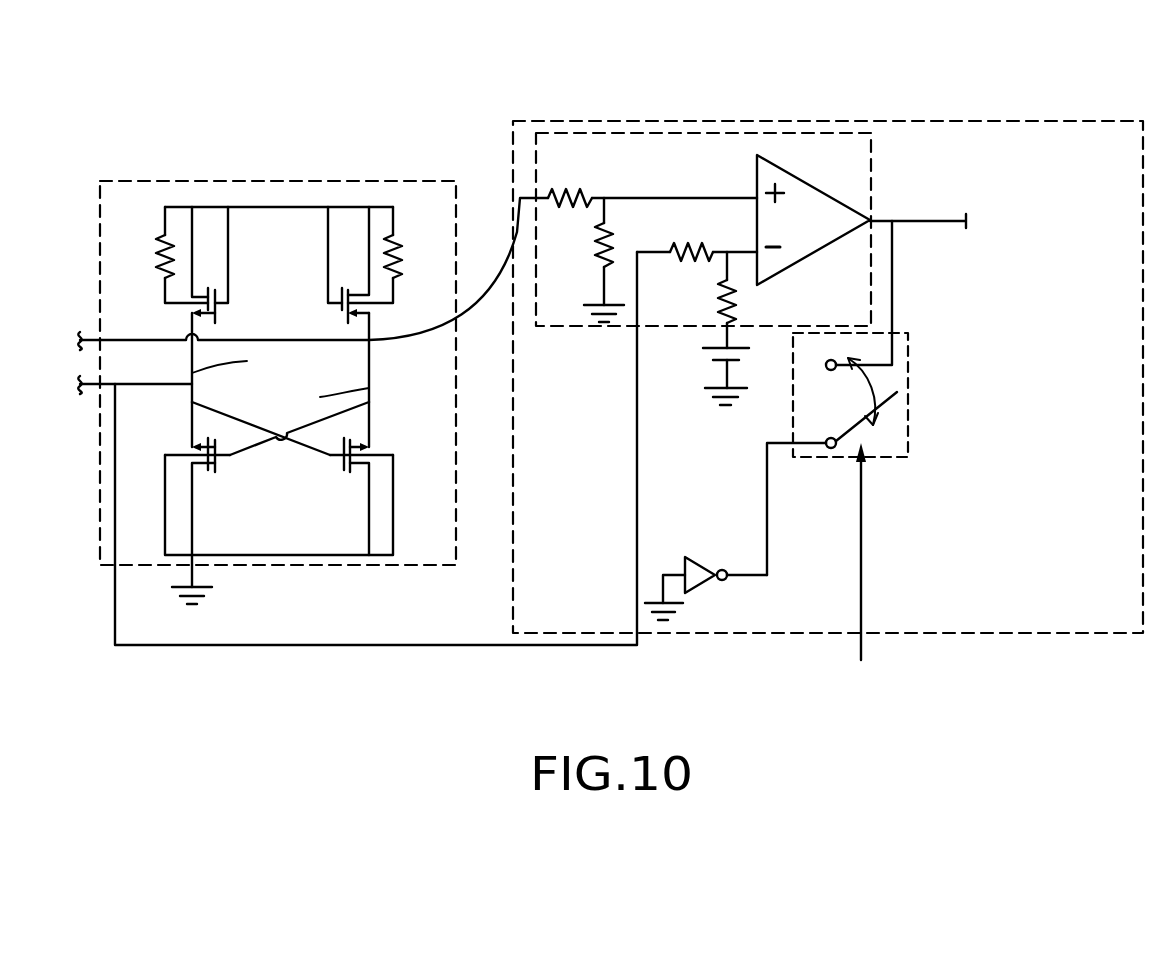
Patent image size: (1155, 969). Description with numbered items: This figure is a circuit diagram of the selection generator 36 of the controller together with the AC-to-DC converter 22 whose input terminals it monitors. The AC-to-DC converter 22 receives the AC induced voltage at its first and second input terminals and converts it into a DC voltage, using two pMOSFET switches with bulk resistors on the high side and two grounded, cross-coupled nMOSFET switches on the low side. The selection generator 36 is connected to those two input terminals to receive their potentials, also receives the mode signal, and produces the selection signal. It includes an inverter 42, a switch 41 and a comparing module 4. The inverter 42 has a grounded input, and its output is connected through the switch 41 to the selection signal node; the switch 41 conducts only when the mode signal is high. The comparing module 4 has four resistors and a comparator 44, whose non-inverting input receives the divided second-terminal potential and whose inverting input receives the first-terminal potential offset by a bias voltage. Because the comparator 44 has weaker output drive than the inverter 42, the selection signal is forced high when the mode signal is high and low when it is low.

The AC-to-DC converter 22 is at (292, 180).
The selection generator 36 is at (900, 119).
The comparing module 4 is at (696, 132).
The comparator 44 is at (806, 178).
The switch 41 is at (910, 400).
The inverter 42 is at (700, 590).